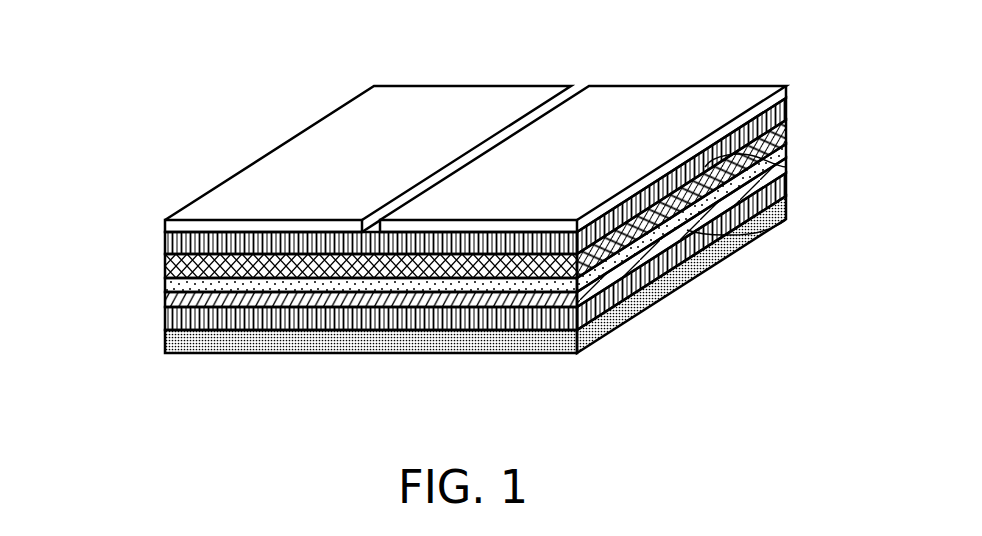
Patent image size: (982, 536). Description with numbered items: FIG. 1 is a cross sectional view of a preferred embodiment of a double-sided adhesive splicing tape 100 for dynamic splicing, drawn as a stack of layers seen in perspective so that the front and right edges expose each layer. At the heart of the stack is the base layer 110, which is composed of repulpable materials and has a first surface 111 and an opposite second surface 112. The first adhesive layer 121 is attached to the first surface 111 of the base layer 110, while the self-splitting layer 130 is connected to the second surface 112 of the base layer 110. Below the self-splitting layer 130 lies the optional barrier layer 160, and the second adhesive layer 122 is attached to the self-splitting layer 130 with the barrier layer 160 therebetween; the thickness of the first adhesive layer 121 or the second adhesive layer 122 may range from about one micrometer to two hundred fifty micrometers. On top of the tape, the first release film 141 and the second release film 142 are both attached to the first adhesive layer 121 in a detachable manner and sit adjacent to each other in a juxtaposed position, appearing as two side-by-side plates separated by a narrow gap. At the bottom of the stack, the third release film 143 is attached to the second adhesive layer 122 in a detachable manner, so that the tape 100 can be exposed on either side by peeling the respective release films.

The double-sided adhesive splicing tape 100 is at (109, 56).
The base layer 110 is at (165, 268).
The first surface 111 is at (786, 167).
The second surface 112 is at (786, 219).
The first adhesive layer 121 is at (165, 242).
The second adhesive layer 122 is at (165, 317).
The self-splitting layer 130 is at (165, 285).
The first release film 141 is at (278, 162).
The second release film 142 is at (730, 95).
The third release film 143 is at (165, 339).
The barrier layer 160 is at (165, 298).